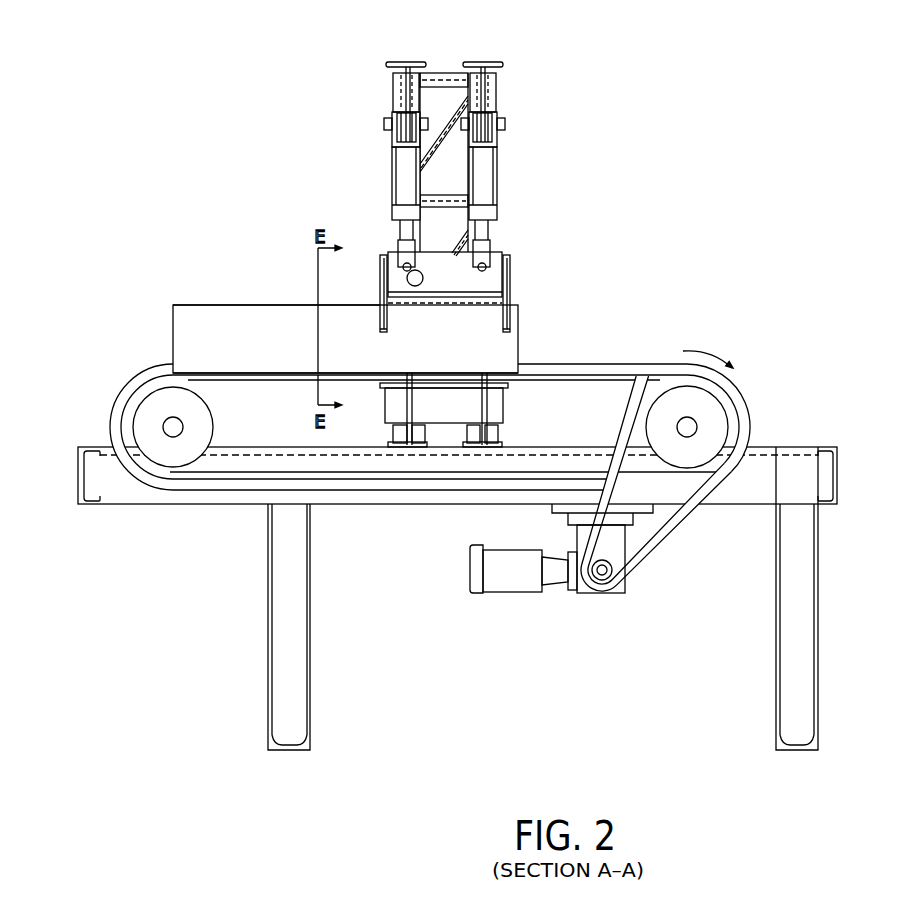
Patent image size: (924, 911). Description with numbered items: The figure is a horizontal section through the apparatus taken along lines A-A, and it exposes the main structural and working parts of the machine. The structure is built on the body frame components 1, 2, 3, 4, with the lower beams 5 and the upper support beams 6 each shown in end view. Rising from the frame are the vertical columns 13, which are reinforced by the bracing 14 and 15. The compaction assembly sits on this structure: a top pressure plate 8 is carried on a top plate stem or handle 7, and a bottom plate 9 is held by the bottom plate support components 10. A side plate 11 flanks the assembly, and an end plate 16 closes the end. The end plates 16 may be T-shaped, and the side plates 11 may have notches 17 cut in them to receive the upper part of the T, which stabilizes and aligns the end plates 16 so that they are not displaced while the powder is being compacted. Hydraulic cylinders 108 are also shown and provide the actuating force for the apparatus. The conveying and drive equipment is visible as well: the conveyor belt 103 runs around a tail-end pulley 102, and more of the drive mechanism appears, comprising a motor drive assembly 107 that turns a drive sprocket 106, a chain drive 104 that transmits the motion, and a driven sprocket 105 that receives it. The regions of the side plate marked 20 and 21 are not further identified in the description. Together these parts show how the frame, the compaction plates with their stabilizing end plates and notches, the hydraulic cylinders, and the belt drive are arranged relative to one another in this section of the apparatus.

The body frame component 1 is at (128, 505).
The body frame component 2 is at (77, 480).
The body frame component 3 is at (267, 647).
The body frame component 4 is at (295, 750).
The lower beam 5 is at (395, 442).
The upper support beam 6 is at (407, 62).
The top plate stem 7 is at (408, 281).
The top plate 8 is at (497, 295).
The bottom plate 9 is at (397, 390).
The bottom plate support component 10 is at (505, 400).
The side plate 11 is at (281, 303).
The vertical column 13 is at (393, 93).
The bracing 14 is at (432, 73).
The bracing 15 is at (452, 120).
The end plate 16 is at (377, 252).
The notch 17 is at (387, 308).
The left compartment 20 is at (255, 339).
The right compartment 21 is at (435, 334).
The tail-end pulley 102 is at (213, 420).
The conveyor belt 103 is at (130, 377).
The chain drive 104 is at (678, 515).
The driven sprocket 105 is at (700, 408).
The drive sprocket 106 is at (613, 552).
The motor drive assembly 107 is at (607, 593).
The hydraulic cylinder 108 is at (392, 187).